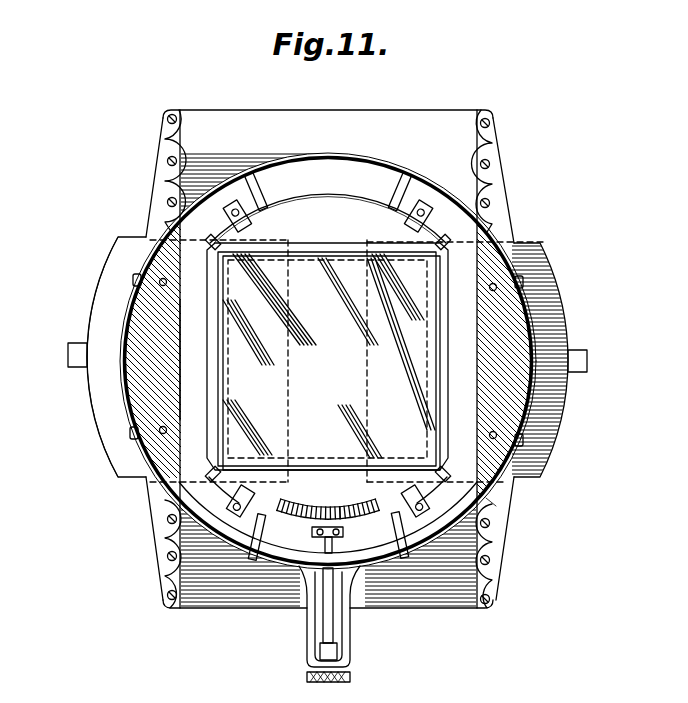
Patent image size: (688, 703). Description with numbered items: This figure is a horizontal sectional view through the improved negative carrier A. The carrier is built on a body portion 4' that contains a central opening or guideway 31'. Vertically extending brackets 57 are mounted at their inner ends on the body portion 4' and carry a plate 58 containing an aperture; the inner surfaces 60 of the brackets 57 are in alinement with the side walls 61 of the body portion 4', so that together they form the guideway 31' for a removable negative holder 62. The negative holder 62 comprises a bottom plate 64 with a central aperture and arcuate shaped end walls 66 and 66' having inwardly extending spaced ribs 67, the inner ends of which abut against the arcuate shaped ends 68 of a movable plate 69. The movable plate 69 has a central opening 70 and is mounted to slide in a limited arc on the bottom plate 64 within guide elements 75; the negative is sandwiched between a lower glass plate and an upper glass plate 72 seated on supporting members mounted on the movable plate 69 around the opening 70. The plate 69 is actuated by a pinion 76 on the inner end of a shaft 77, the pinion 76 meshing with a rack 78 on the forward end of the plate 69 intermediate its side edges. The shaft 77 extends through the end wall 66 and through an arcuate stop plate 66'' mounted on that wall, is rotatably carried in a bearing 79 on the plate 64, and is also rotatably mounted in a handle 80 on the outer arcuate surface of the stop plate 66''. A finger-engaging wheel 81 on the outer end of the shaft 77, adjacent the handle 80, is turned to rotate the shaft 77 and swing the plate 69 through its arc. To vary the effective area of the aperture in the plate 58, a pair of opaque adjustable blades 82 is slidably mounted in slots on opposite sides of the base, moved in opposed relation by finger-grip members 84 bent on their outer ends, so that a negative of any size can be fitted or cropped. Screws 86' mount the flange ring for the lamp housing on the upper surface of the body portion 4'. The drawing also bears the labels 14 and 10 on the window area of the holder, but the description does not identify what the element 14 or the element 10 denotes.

The plate 58 is at (313, 130).
The brackets 57 is at (157, 178).
The inner surfaces 60 is at (180, 148).
The negative holder 62 is at (355, 150).
The bottom plate 64 is at (190, 355).
The guideway 31' is at (329, 357).
The adjustable blades 82 is at (108, 380).
The body portion 4' is at (325, 357).
The members 84 is at (70, 355).
The screws 86' is at (337, 360).
The arcuate shaped ends 68 is at (325, 189).
The arcuate shaped end wall 66' is at (328, 184).
The arcuate stop plate 66'' is at (328, 556).
The arcuate shaped end wall 66 is at (511, 497).
The ribs 67 is at (263, 185).
The guide elements 75 is at (237, 205).
The movable plate 69 is at (328, 351).
The glass plate 14 is at (272, 252).
The side walls 61 is at (464, 323).
The upper transparent member or glass plate 72 is at (327, 359).
The instrument 10 is at (426, 360).
The central opening 70 is at (236, 305).
The pinion 76 is at (305, 508).
The rack 78 is at (350, 508).
The bearing 79 is at (312, 532).
The handle 80 is at (312, 625).
The shaft 77 is at (323, 645).
The finger-engaging wheel 81 is at (308, 679).
The negative carrier A is at (528, 231).